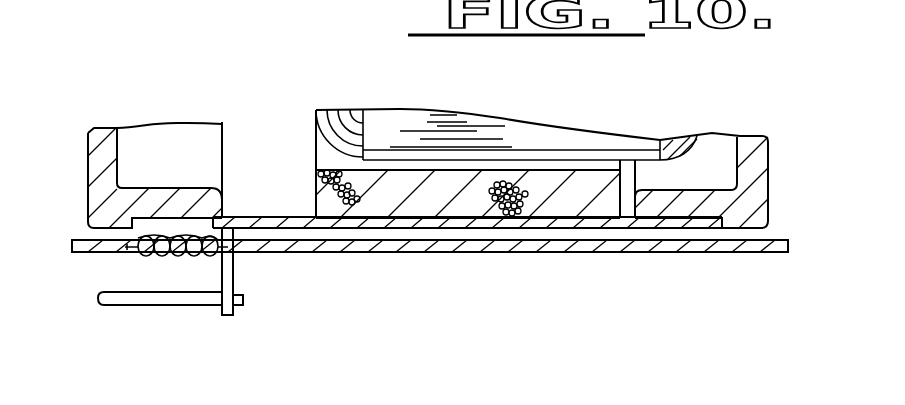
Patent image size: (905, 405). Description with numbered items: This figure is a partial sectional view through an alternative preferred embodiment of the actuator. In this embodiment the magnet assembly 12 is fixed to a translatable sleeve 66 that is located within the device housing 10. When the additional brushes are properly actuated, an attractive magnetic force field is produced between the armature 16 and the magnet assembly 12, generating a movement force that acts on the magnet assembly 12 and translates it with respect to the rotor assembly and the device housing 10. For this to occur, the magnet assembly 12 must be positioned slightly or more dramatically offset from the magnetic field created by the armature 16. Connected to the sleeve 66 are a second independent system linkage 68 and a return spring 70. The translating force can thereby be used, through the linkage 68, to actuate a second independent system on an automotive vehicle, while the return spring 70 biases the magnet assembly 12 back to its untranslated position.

The device housing 10 is at (444, 245).
The magnet assembly 12 is at (567, 208).
The armature 16 is at (513, 133).
The translatable sleeve 66 is at (342, 217).
The second independent system linkage 68 is at (142, 300).
The return spring 70 is at (172, 252).